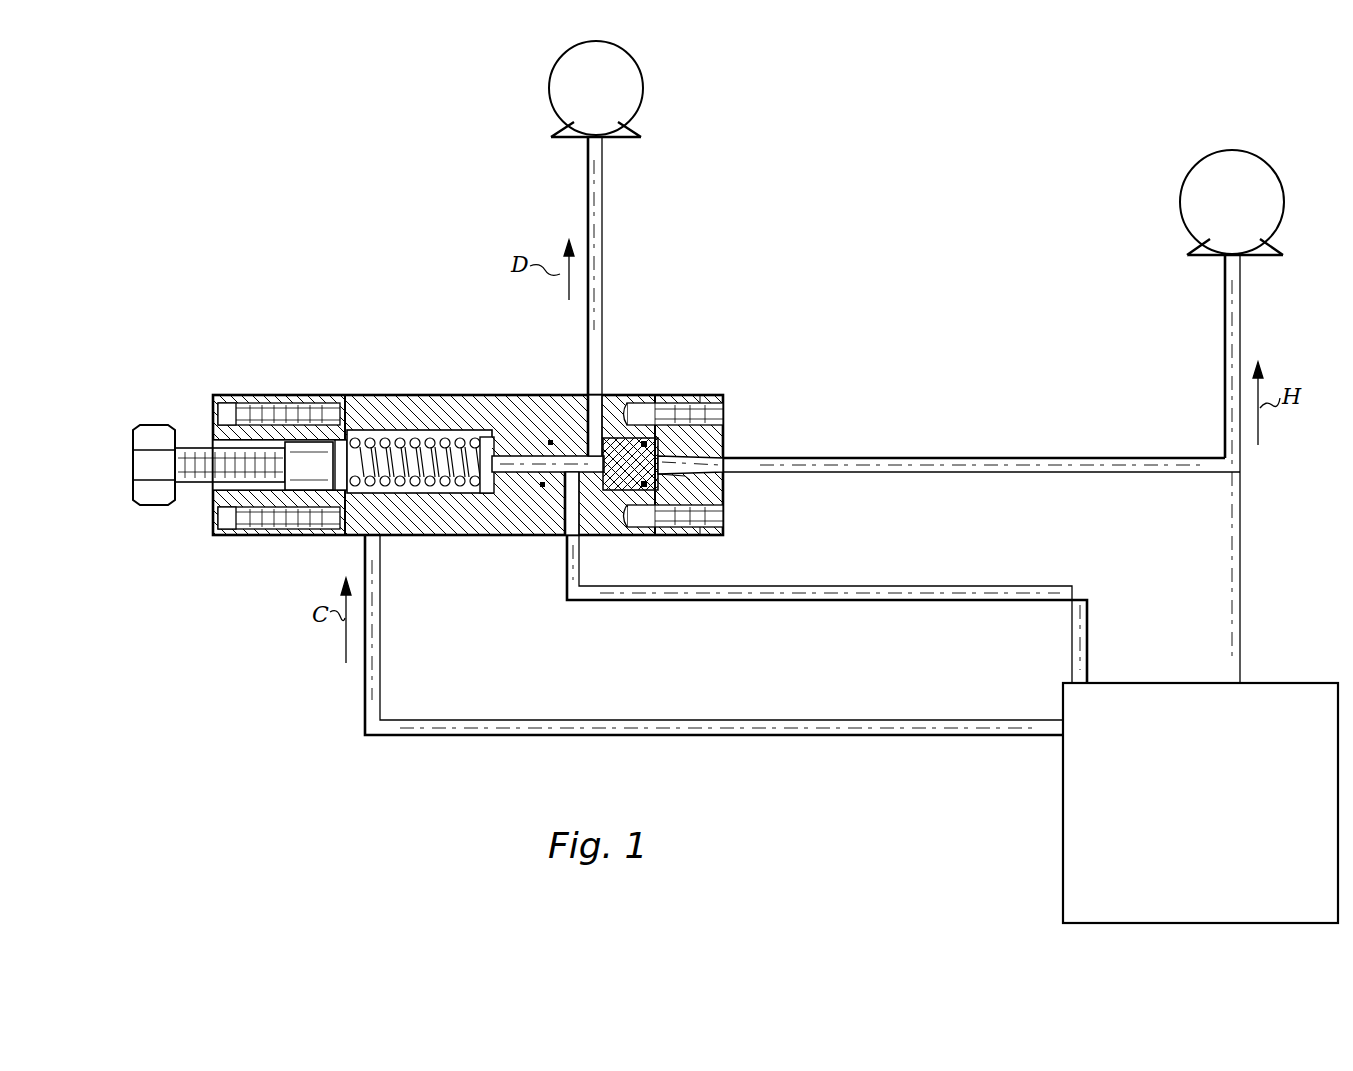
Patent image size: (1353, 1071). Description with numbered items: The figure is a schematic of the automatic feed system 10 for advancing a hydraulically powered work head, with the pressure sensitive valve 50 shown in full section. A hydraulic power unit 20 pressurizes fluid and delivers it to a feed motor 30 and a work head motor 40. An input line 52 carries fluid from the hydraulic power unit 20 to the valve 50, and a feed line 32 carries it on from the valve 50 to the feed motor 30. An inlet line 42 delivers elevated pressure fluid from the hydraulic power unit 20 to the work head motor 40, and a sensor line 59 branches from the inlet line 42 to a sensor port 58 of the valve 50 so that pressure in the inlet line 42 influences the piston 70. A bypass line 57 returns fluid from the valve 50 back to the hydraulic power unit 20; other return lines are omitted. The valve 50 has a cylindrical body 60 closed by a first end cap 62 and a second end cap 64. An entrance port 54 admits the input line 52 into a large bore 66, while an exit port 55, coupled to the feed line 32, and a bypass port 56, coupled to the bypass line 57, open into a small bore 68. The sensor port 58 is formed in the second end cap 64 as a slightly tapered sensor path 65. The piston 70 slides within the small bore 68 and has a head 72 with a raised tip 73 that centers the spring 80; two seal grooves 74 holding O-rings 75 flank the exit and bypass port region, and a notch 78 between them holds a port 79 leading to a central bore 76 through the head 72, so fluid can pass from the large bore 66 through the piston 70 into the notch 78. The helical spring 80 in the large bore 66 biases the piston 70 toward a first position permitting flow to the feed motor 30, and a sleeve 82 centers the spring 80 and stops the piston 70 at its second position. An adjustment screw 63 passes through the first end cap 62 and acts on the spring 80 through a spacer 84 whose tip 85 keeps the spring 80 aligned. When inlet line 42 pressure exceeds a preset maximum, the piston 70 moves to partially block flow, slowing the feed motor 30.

The automatic feed system 10 is at (1033, 147).
The hydraulic power unit 20 is at (1283, 720).
The feed motor 30 is at (642, 70).
The feed line 32 is at (603, 172).
The work head motor 40 is at (1285, 183).
The inlet line 42 is at (1242, 298).
The valve 50 is at (287, 284).
The input line 52 is at (380, 622).
The entrance port 54 is at (385, 518).
The exit port 55 is at (612, 410).
The bypass port 56 is at (558, 512).
The bypass line 57 is at (745, 600).
The sensor port 58 is at (723, 440).
The sensor line 59 is at (812, 458).
The body 60 is at (412, 400).
The first end cap 62 is at (228, 395).
The adjustment screw 63 is at (195, 455).
The second end cap 64 is at (690, 395).
The sensor path 65 is at (723, 490).
The large bore 66 is at (488, 440).
The small bore 68 is at (620, 520).
The piston 70 is at (577, 415).
The head 72 is at (498, 495).
The tip 73 is at (462, 515).
The seal grooves 74 is at (678, 535).
The O-rings 75 is at (652, 530).
The central bore 76 is at (525, 440).
The notch 78 is at (590, 535).
The port 79 is at (605, 455).
The spring 80 is at (388, 440).
The sleeve 82 is at (350, 440).
The spacer 84 is at (308, 440).
The tip 85 is at (336, 500).